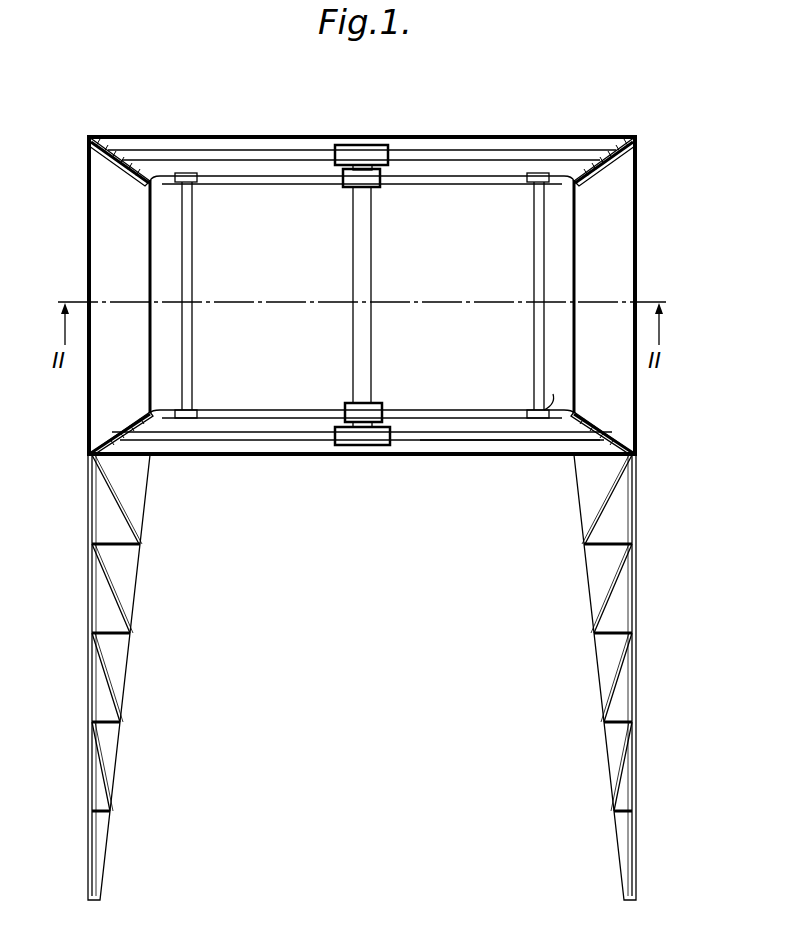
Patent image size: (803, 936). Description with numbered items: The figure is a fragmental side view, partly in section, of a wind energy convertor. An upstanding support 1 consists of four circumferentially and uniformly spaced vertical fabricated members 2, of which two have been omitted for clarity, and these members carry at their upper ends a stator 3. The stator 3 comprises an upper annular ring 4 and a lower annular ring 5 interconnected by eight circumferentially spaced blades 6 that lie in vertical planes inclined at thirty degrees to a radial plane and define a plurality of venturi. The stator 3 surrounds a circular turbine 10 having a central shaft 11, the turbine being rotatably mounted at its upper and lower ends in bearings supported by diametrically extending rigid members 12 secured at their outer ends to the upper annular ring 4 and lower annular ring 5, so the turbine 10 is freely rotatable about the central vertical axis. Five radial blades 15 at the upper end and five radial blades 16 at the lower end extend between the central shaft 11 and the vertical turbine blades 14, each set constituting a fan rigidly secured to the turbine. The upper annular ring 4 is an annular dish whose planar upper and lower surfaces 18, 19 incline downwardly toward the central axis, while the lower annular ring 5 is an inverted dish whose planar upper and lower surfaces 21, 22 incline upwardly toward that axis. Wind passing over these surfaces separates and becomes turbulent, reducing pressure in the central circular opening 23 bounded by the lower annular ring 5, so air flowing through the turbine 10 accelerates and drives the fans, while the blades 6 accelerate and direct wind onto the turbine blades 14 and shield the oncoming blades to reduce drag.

The upstanding support 1 is at (124, 783).
The vertical fabricated member 2 is at (86, 614).
The stator 3 is at (82, 384).
The upper annular ring 4 is at (172, 130).
The lower annular ring 5 is at (517, 466).
The stator blade 6 is at (98, 246).
The turbine 10 is at (558, 378).
The central shaft 11 is at (366, 345).
The rigid member 12 is at (489, 151).
The turbine blade 14 is at (192, 260).
The fan blade 15 is at (428, 182).
The second fan blade 16 is at (262, 412).
The upper planar surface 18 is at (282, 148).
The lower planar surface 19 is at (108, 160).
The upper planar surface 21 is at (106, 437).
The lower planar surface 22 is at (446, 450).
The central circular opening 23 is at (548, 404).